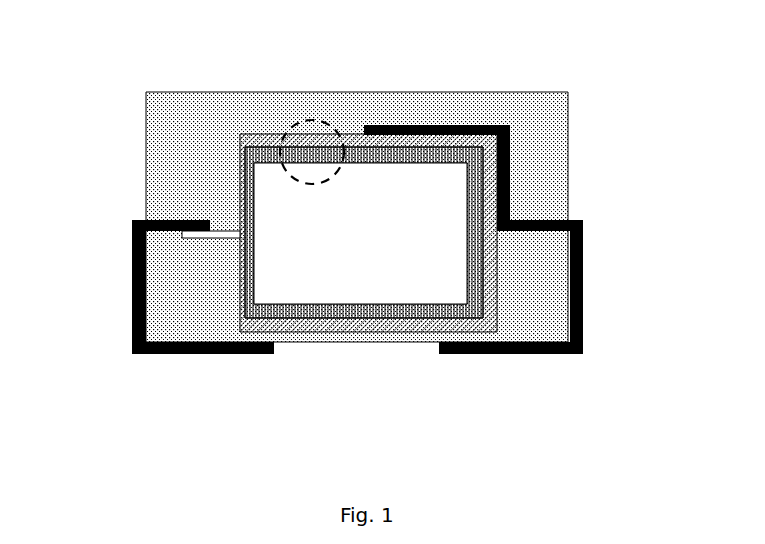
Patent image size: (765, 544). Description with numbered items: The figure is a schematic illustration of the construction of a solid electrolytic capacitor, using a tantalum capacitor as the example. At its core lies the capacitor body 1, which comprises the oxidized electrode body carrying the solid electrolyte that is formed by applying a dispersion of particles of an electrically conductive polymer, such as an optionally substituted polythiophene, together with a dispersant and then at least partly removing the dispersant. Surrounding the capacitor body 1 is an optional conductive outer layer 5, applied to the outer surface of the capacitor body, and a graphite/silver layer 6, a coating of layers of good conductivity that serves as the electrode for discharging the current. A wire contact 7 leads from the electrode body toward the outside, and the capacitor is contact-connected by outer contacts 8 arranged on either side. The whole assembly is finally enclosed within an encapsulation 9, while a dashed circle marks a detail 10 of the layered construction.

The capacitor body 1 is at (336, 274).
The optional conductive outer layer 5 is at (240, 182).
The graphite/silver layer 6 is at (382, 327).
The wire contact to electrode body 7 is at (192, 243).
The outer contacts 8 is at (131, 254).
The encapsulation 9 is at (549, 147).
The detail 10 is at (311, 119).